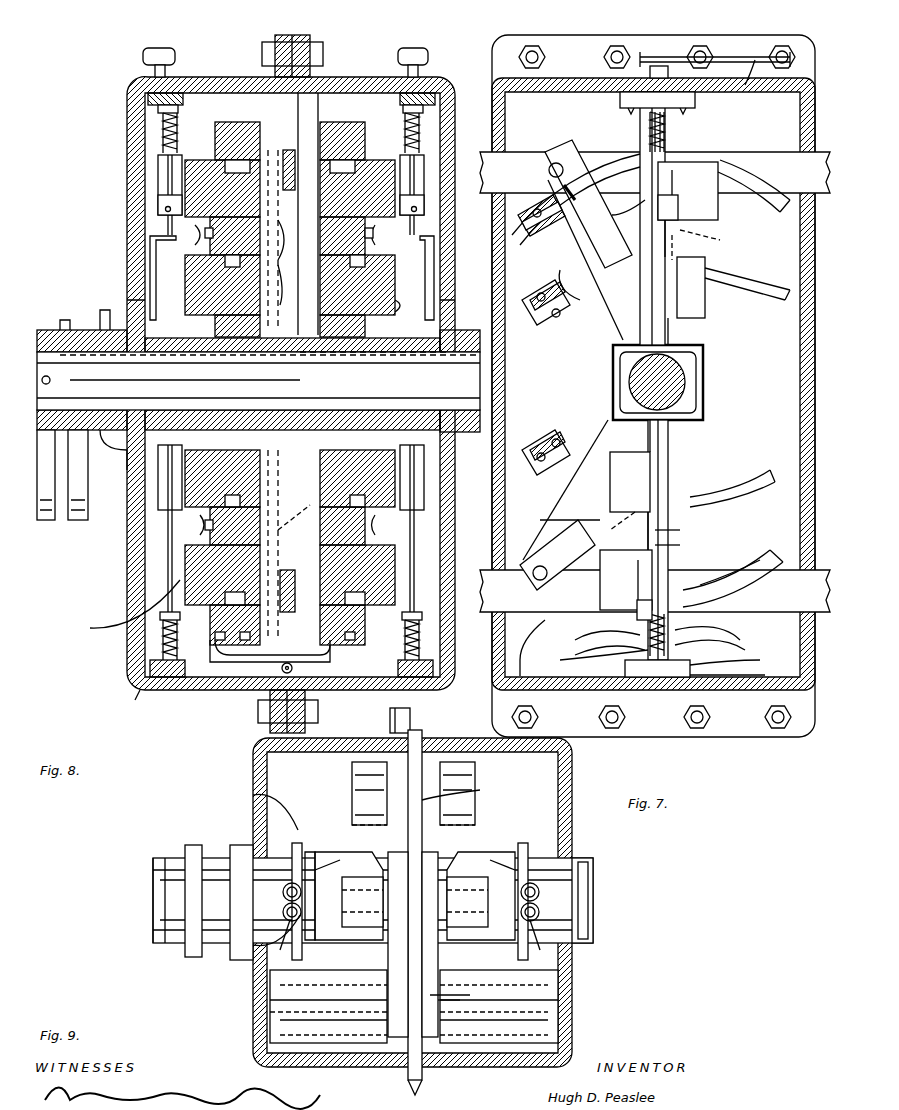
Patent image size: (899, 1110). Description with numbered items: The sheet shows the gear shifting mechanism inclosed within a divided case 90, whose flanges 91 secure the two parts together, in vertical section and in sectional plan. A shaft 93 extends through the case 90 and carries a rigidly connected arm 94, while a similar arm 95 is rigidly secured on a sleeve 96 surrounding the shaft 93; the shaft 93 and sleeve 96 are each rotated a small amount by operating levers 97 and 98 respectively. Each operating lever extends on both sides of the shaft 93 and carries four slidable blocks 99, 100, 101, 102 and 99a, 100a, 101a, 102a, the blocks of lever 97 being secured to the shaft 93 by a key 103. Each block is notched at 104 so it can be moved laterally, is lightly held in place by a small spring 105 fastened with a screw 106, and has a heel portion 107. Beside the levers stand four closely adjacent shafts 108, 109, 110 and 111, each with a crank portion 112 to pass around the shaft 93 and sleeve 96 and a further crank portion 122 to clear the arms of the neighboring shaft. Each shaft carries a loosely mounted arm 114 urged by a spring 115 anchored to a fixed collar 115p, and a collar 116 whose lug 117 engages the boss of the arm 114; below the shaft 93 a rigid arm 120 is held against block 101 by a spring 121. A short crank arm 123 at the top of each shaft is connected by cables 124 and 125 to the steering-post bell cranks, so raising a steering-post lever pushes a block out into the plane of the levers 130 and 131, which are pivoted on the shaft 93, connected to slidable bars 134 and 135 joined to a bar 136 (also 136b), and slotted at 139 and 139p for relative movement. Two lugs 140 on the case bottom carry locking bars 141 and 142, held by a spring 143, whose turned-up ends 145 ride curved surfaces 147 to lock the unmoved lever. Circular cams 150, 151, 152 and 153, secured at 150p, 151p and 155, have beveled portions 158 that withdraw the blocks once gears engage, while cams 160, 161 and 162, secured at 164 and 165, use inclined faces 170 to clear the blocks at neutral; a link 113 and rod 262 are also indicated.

In FIG. 8, the divided case 90 is at (140, 215).
In FIG. 7, the divided case 90 is at (635, 386).
In FIG. 9, the divided case 90 is at (253, 808).
In FIG. 8, the flanges 91 is at (262, 45).
In FIG. 7, the flanges 91 is at (728, 40).
In FIG. 8, the shaft 93 is at (258, 381).
In FIG. 7, the shaft 93 is at (688, 385).
In FIG. 9, the shaft 93 is at (590, 890).
In FIG. 8, the arm 94 is at (50, 515).
In FIG. 8, the arm 95 is at (82, 515).
In FIG. 8, the sleeve 96 is at (85, 314).
In FIG. 9, the sleeve 96 is at (215, 925).
In FIG. 8, the operating lever 97 is at (345, 125).
In FIG. 9, the operating lever 97 is at (475, 915).
In FIG. 8, the operating lever 98 is at (240, 125).
In FIG. 9, the operating lever 98 is at (362, 915).
In FIG. 8, the block 99 is at (200, 160).
In FIG. 9, the block 99 is at (322, 895).
In FIG. 8, the block 99a is at (325, 200).
In FIG. 9, the block 99a is at (500, 895).
In FIG. 8, the block 100 is at (216, 236).
In FIG. 8, the block 100a is at (265, 283).
In FIG. 8, the block 101 is at (219, 526).
In FIG. 8, the block 101a is at (262, 468).
In FIG. 8, the block 102 is at (198, 605).
In FIG. 8, the block 102a is at (318, 560).
In FIG. 8, the key 103 is at (365, 350).
In FIG. 8, the notch 104 is at (305, 160).
In FIG. 8, the spring 105 is at (395, 270).
In FIG. 7, the spring 105 is at (684, 542).
In FIG. 8, the screw 106 is at (362, 236).
In FIG. 7, the screw 106 is at (684, 526).
In FIG. 8, the heel portion 107 is at (409, 305).
In FIG. 9, the heel portion 107 is at (312, 852).
In FIG. 8, the shaft 108 is at (435, 270).
In FIG. 7, the shaft 108 is at (670, 440).
In FIG. 9, the shaft 108 is at (535, 868).
In FIG. 7, the shaft 109 is at (625, 209).
In FIG. 9, the shaft 109 is at (543, 941).
In FIG. 8, the shaft 110 is at (152, 278).
In FIG. 9, the shaft 110 is at (290, 868).
In FIG. 9, the shaft 111 is at (280, 942).
In FIG. 7, the crank portion 112 is at (612, 385).
In FIG. 7, the link 113 is at (675, 386).
In FIG. 8, the arm 114 is at (160, 172).
In FIG. 7, the arm 114 is at (705, 160).
In FIG. 9, the arm 114 is at (253, 786).
In FIG. 8, the spring 115 is at (160, 135).
In FIG. 7, the spring 115 is at (668, 135).
In FIG. 8, the fixed collar 115p is at (160, 108).
In FIG. 7, the fixed collar 115p is at (685, 115).
In FIG. 8, the collar 116 is at (158, 212).
In FIG. 7, the collar 116 is at (660, 407).
In FIG. 8, the lug 117 is at (160, 205).
In FIG. 8, the arm 120 is at (160, 525).
In FIG. 7, the arm 120 is at (657, 384).
In FIG. 8, the spring 121 is at (160, 632).
In FIG. 7, the spring 121 is at (725, 661).
In FIG. 8, the crank portion 122 is at (150, 291).
In FIG. 7, the crank portion 122 is at (672, 328).
In FIG. 8, the crank arm 123 is at (175, 48).
In FIG. 7, the crank arm 123 is at (648, 70).
In FIG. 8, the cable 124 is at (440, 40).
In FIG. 7, the cable 124 is at (665, 52).
In FIG. 7, the cable 125 is at (755, 57).
In FIG. 7, the lever 130 is at (572, 345).
In FIG. 7, the lever 131 is at (565, 405).
In FIG. 9, the lever 131 is at (459, 991).
In FIG. 8, the slidable bar 134 is at (300, 205).
In FIG. 7, the slidable bar 134 is at (585, 165).
In FIG. 9, the slidable bar 134 is at (467, 792).
In FIG. 8, the slidable bar 135 is at (280, 604).
In FIG. 7, the slidable bar 135 is at (536, 648).
In FIG. 9, the slidable bar 135 is at (425, 1085).
In FIG. 8, the bar 136 is at (390, 720).
In FIG. 8, the bar 136b is at (295, 516).
In FIG. 7, the slot 139 is at (572, 155).
In FIG. 7, the slot 139p is at (540, 600).
In FIG. 8, the lug 140 is at (270, 690).
In FIG. 8, the locking bar 141 is at (205, 698).
In FIG. 7, the locking bar 141 is at (731, 666).
In FIG. 7, the locking bar 142 is at (607, 635).
In FIG. 8, the spring 143 is at (310, 670).
In FIG. 7, the spring 143 is at (620, 673).
In FIG. 8, the turned-up end 145 is at (140, 692).
In FIG. 7, the curved surface 147 is at (721, 638).
In FIG. 8, the circular cam 150 is at (294, 240).
In FIG. 9, the circular cam 150 is at (352, 782).
In FIG. 7, the cam securing point 150p is at (546, 267).
In FIG. 9, the cam securing point 150p is at (328, 1006).
In FIG. 8, the circular cam 151 is at (297, 162).
In FIG. 7, the circular cam 151 is at (641, 335).
In FIG. 9, the circular cam 151 is at (480, 800).
In FIG. 9, the cam securing point 151p is at (499, 1006).
In FIG. 8, the circular cam 152 is at (365, 610).
In FIG. 7, the circular cam 152 is at (770, 568).
In FIG. 8, the circular cam 153 is at (125, 604).
In FIG. 7, the circular cam 153 is at (556, 525).
In FIG. 7, the cam end securing point 155 is at (604, 650).
In FIG. 7, the beveled portion 158 is at (735, 170).
In FIG. 8, the circular cam 160 is at (320, 497).
In FIG. 7, the circular cam 160 is at (740, 470).
In FIG. 8, the circular cam 161 is at (294, 245).
In FIG. 7, the circular cam 161 is at (747, 289).
In FIG. 9, the circular cam 161 is at (490, 840).
In FIG. 8, the circular cam 162 is at (294, 289).
In FIG. 9, the circular cam 162 is at (365, 840).
In FIG. 9, the cam securing point 164 is at (479, 984).
In FIG. 9, the cam securing point 165 is at (340, 975).
In FIG. 9, the inclined face 170 is at (454, 944).
In FIG. 8, the rod 262 is at (262, 480).